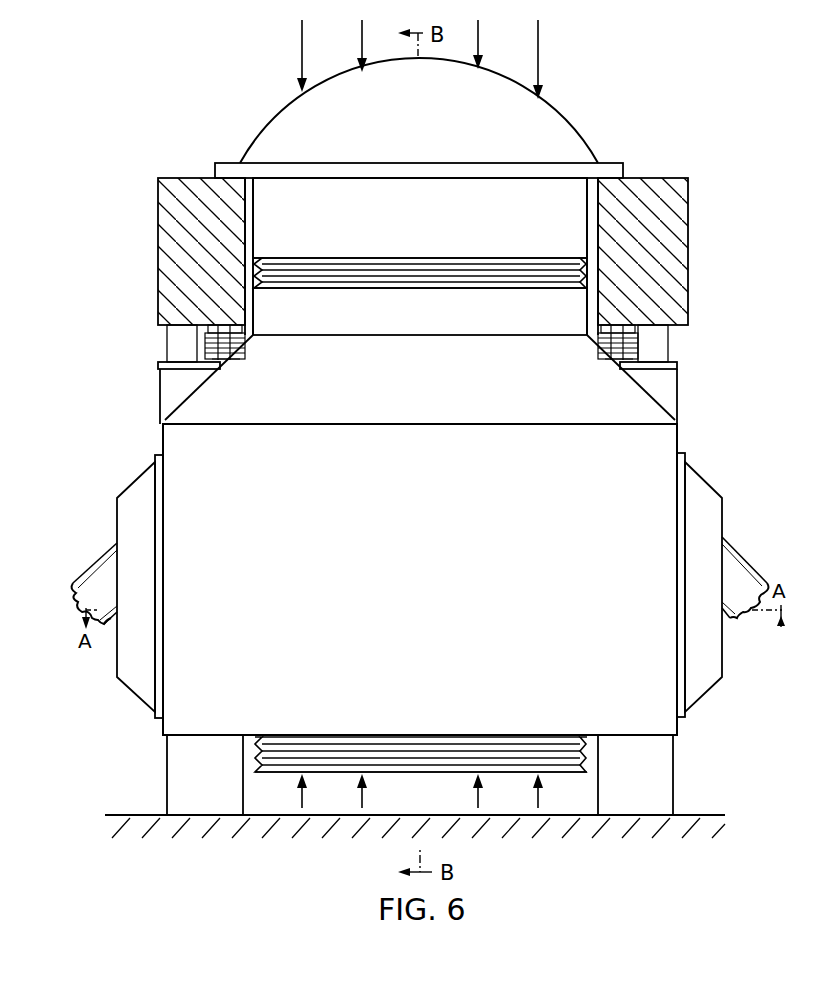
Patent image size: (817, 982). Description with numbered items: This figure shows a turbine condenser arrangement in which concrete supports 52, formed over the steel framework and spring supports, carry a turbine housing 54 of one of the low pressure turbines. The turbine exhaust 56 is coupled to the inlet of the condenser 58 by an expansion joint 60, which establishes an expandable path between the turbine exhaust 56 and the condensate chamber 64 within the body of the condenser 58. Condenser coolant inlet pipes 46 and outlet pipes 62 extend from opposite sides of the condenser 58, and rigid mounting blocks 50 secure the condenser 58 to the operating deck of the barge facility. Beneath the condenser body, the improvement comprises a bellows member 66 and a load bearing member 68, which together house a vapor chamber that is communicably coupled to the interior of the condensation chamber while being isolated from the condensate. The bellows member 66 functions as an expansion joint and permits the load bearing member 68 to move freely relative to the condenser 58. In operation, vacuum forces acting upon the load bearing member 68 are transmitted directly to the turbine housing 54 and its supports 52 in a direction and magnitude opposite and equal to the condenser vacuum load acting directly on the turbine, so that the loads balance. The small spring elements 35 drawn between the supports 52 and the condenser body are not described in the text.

The turbine housing 54 is at (578, 135).
The concrete supports 52 is at (158, 290).
The turbine exhaust 56 is at (431, 237).
The expansion joint 60 is at (500, 261).
The condenser 58 is at (431, 327).
The spring assembly 35 is at (207, 345).
The condensate chamber 64 is at (431, 580).
The condenser coolant inlet pipes 46 is at (104, 567).
The condenser coolant outlet pipes 62 is at (745, 561).
The rigid mounting blocks 50 is at (217, 788).
The bellows member 66 is at (258, 748).
The load bearing member 68 is at (420, 776).